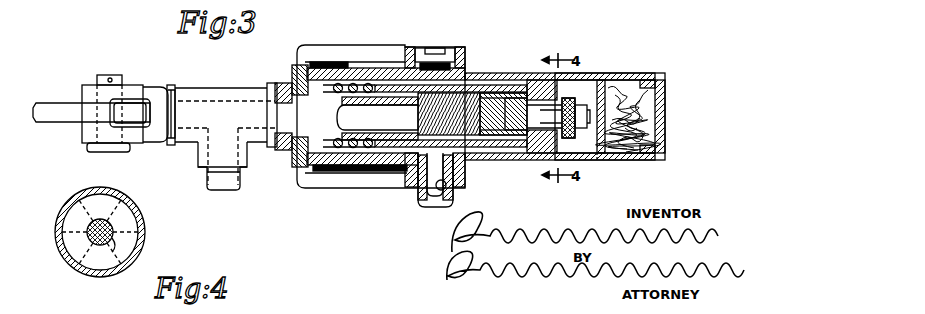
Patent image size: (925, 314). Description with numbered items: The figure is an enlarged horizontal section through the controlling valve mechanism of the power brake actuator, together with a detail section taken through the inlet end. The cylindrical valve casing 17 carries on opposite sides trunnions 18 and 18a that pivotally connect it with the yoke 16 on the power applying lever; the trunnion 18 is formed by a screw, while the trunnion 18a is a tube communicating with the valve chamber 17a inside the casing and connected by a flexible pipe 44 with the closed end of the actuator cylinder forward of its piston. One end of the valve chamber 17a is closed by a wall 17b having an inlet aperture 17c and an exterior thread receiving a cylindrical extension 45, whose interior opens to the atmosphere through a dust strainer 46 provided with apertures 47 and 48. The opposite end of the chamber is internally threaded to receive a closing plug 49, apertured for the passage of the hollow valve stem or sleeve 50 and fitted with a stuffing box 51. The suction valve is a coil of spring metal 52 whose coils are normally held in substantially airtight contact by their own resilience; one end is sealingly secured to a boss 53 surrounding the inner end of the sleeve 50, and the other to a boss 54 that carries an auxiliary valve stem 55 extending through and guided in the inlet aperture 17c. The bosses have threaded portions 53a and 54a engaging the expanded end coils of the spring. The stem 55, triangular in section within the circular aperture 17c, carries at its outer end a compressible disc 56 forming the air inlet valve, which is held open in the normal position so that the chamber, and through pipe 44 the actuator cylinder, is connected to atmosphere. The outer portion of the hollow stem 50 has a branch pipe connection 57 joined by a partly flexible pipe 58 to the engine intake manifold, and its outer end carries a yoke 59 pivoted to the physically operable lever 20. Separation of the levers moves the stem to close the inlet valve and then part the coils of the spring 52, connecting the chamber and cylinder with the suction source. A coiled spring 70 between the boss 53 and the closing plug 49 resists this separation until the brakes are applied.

In FIG. 3, the yoke 16 is at (345, 55).
In FIG. 3, the valve casing 17 is at (520, 78).
In FIG. 3, the valve chamber 17a is at (522, 147).
In FIG. 4, the valve chamber 17a is at (108, 206).
In FIG. 3, the wall 17b is at (537, 78).
In FIG. 3, the inlet aperture 17c is at (560, 95).
In FIG. 4, the inlet aperture 17c is at (140, 233).
In FIG. 3, the trunnion 18 is at (443, 55).
In FIG. 3, the trunnion 18a is at (452, 198).
In FIG. 3, the physically operable lever 20 is at (53, 112).
In FIG. 3, the flexible pipe 44 is at (417, 198).
In FIG. 3, the cylindrical extension 45 is at (613, 78).
In FIG. 4, the cylindrical extension 45 is at (60, 216).
In FIG. 3, the dust strainer 46 is at (660, 110).
In FIG. 3, the apertures 47 is at (645, 80).
In FIG. 3, the apertures 48 is at (572, 102).
In FIG. 3, the closing plug 49 is at (292, 72).
In FIG. 3, the hollow valve stem 50 is at (287, 150).
In FIG. 3, the stuffing box 51 is at (298, 167).
In FIG. 3, the suction valve 52 is at (470, 95).
In FIG. 3, the boss 53 is at (390, 143).
In FIG. 3, the threaded portion 53a is at (397, 97).
In FIG. 3, the boss 54 is at (495, 140).
In FIG. 3, the threaded portion 54a is at (523, 95).
In FIG. 3, the auxiliary valve stem 55 is at (565, 130).
In FIG. 4, the auxiliary valve stem 55 is at (113, 224).
In FIG. 3, the compressible disc 56 is at (572, 160).
In FIG. 3, the branch pipe connection 57 is at (220, 97).
In FIG. 3, the pipe 58 is at (207, 182).
In FIG. 3, the yoke 59 is at (143, 88).
In FIG. 3, the coiled spring 70 is at (350, 133).